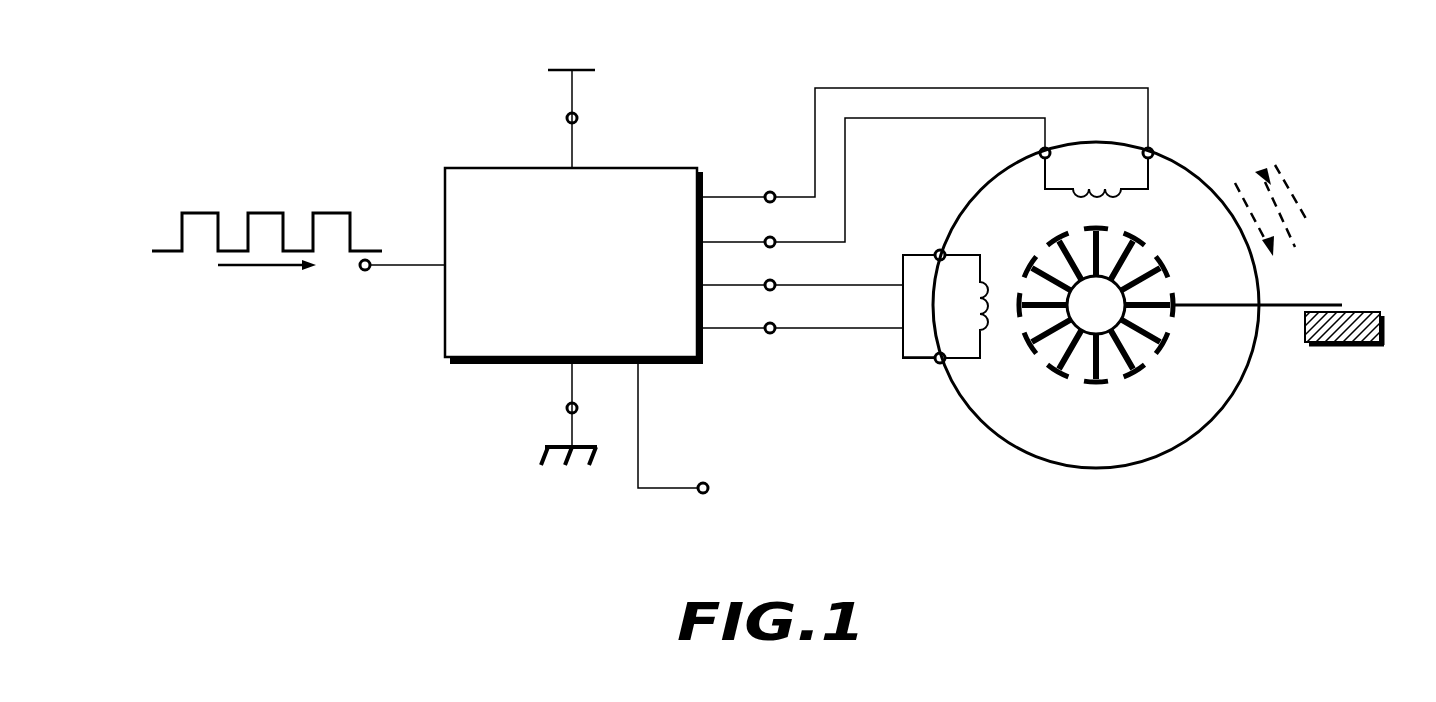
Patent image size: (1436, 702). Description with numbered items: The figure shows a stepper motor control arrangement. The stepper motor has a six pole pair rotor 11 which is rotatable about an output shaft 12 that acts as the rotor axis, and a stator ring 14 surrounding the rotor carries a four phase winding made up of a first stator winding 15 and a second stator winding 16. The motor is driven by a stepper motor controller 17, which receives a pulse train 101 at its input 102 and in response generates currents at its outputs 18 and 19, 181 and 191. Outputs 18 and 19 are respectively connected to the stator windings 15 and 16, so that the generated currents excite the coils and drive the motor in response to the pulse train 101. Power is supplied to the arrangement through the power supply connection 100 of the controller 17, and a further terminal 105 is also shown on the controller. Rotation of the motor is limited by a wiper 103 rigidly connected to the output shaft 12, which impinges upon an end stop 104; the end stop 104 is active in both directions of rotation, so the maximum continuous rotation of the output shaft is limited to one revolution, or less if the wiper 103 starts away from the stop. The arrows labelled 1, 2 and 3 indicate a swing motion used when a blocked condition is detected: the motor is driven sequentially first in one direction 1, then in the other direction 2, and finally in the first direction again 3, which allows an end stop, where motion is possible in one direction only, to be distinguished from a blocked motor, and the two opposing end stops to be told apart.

The first direction drive 1 is at (1254, 219).
The other direction drive 2 is at (1275, 207).
The first direction drive again 3 is at (1291, 193).
The six pole pair rotor 11 is at (1060, 373).
The output shaft 12 is at (1112, 320).
The stator ring 14 is at (997, 180).
The stator winding 15 is at (1108, 189).
The stator winding 16 is at (993, 280).
The stepper motor controller 17 is at (637, 168).
The controller output 18 is at (768, 192).
The controller output 181 is at (773, 237).
The controller output 19 is at (774, 323).
The controller output 191 is at (773, 280).
The power supply connection 100 is at (576, 113).
The pulse train 101 is at (264, 206).
The controller input 102 is at (363, 272).
The wiper 103 is at (1295, 302).
The end stop 104 is at (1343, 344).
The additional terminal 105 is at (707, 483).